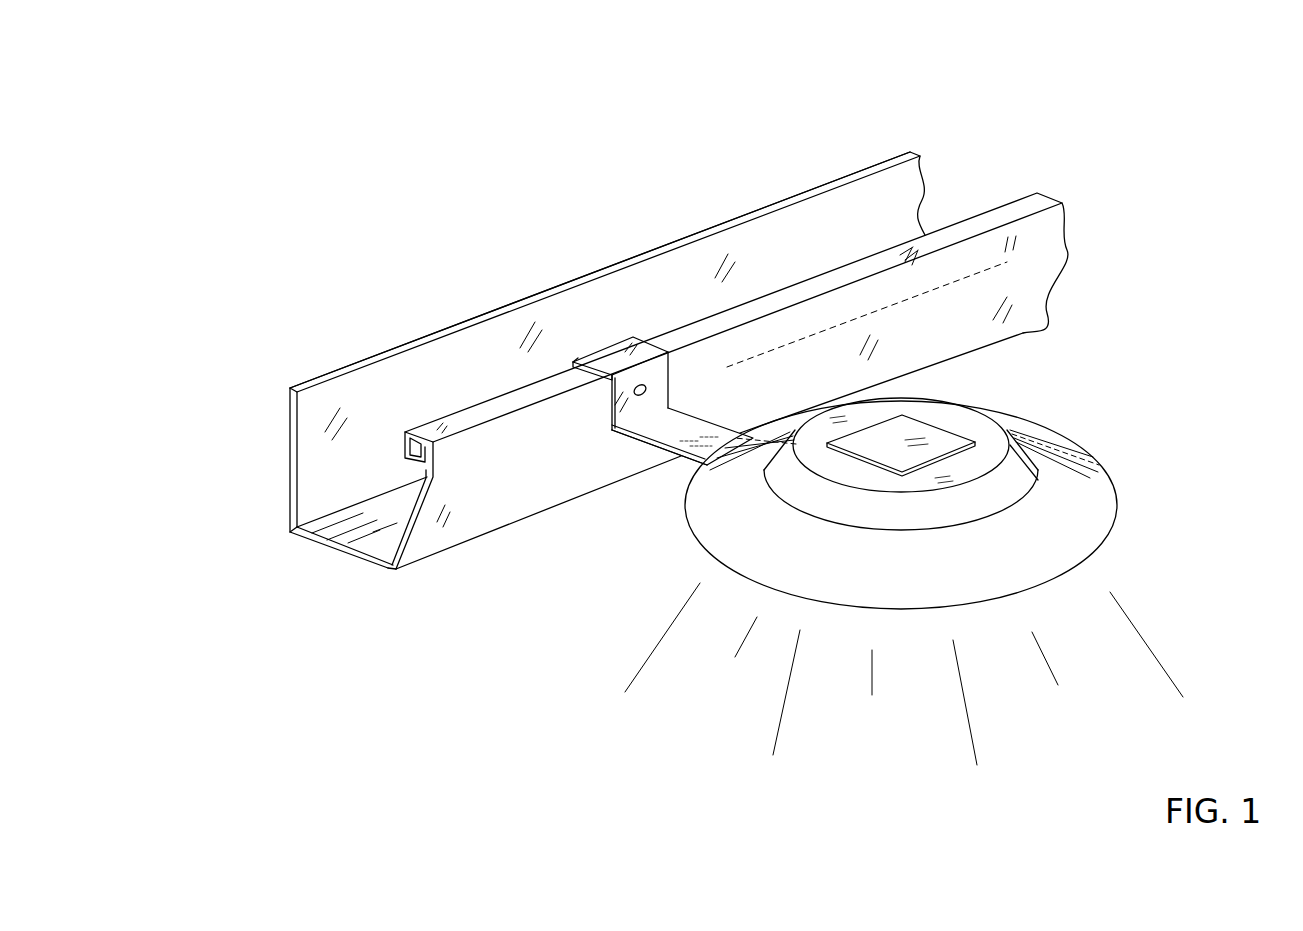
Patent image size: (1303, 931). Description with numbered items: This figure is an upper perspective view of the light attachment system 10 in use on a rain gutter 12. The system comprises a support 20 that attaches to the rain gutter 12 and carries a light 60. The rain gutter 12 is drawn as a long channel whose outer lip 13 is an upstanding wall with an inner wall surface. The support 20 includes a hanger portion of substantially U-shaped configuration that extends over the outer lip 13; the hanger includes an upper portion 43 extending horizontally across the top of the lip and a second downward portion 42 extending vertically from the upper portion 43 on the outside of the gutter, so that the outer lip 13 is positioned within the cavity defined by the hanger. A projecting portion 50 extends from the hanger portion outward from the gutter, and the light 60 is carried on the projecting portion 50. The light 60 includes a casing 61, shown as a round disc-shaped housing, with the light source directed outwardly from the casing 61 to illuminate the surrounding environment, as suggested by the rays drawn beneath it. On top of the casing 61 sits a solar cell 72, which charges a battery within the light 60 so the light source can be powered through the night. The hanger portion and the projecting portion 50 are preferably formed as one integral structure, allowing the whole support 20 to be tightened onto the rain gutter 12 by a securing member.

The light attachment system 10 is at (273, 119).
The rain gutter 12 is at (288, 464).
The outer lip 13 is at (436, 447).
The support 20 is at (577, 324).
The second downward portion 42 is at (672, 373).
The upper portion 43 is at (650, 347).
The projecting portion 50 is at (683, 464).
The light 60 is at (1093, 456).
The casing 61 is at (703, 539).
The solar cell 72 is at (930, 433).